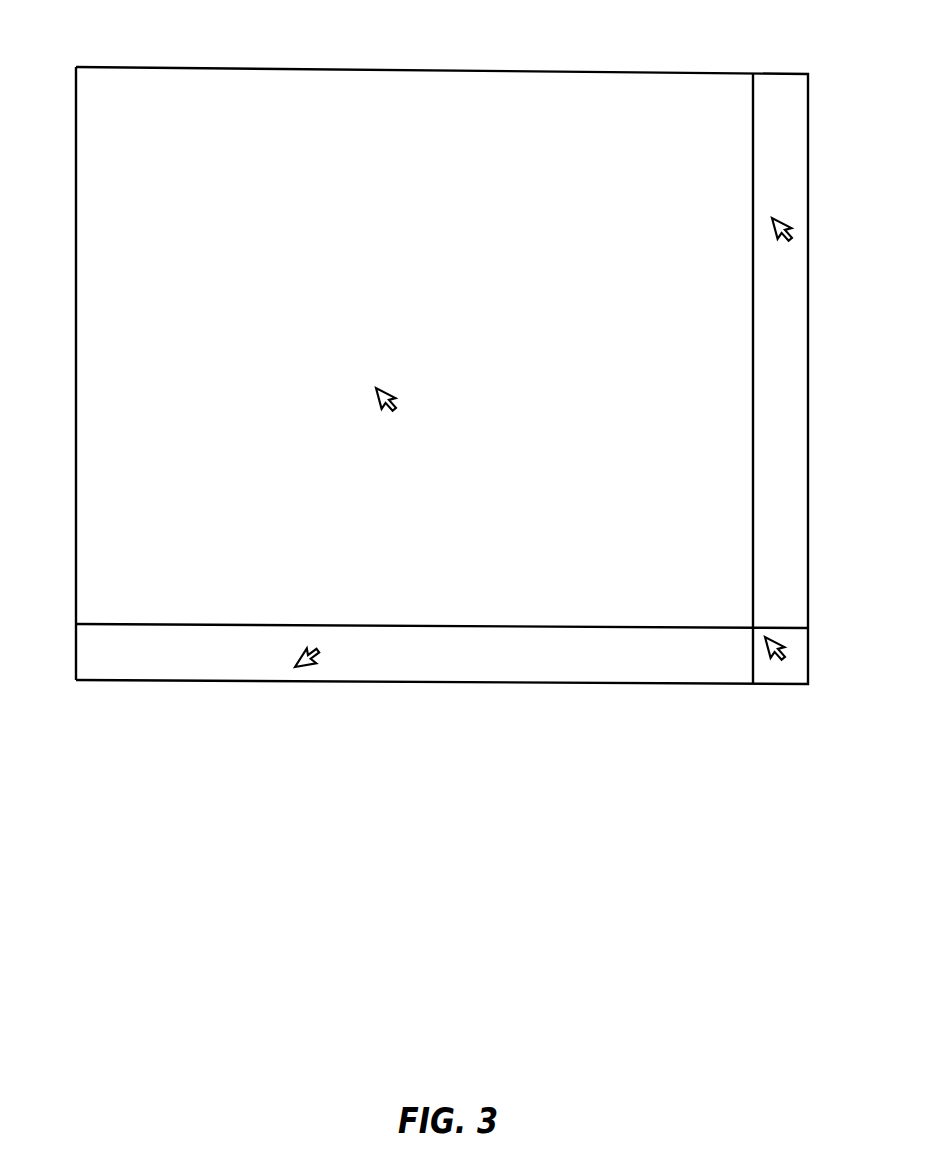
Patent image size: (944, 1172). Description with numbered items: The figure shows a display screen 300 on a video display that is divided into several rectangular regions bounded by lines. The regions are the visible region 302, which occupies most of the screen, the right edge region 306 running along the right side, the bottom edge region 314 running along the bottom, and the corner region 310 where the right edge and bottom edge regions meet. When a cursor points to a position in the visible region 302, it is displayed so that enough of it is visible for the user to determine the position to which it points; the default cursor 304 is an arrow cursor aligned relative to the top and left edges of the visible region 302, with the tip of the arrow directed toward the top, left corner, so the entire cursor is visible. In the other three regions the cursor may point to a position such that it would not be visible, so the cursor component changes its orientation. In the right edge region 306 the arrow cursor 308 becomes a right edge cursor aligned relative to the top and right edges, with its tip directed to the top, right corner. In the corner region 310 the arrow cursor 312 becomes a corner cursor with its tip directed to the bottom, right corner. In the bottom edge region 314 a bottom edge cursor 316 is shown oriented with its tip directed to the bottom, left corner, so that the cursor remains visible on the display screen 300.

The display screen 300 is at (428, 70).
The visible region 302 is at (92, 313).
The default cursor 304 is at (386, 384).
The right edge region 306 is at (798, 140).
The arrow cursor in right edge region 308 is at (784, 214).
The corner region 310 is at (800, 678).
The corner cursor 312 is at (775, 628).
The bottom edge region 314 is at (472, 662).
The cursor in horizontal scroll bar region 316 is at (293, 668).